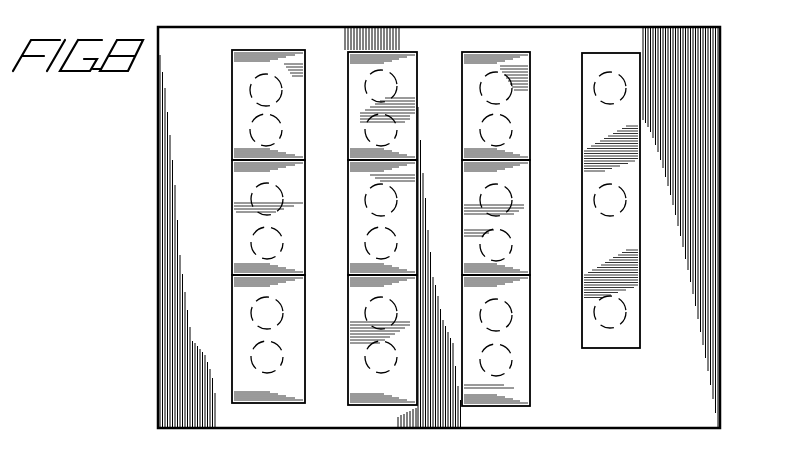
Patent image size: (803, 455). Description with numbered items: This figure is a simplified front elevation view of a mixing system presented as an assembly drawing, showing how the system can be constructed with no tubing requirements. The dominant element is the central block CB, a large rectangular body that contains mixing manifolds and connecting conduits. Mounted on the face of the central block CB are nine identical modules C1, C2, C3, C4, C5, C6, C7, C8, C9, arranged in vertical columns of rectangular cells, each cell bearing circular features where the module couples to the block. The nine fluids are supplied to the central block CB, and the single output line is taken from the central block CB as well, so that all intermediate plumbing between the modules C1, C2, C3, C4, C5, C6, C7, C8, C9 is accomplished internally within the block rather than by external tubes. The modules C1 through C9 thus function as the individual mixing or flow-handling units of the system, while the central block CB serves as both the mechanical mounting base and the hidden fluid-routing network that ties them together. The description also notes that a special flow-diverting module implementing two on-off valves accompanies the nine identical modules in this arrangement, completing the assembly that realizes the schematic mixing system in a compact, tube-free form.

The module C1 is at (268, 105).
The module C2 is at (382, 106).
The module C3 is at (496, 106).
The module C4 is at (268, 339).
The module C5 is at (382, 340).
The module C6 is at (496, 340).
The module C7 is at (268, 217).
The module C8 is at (382, 217).
The module C9 is at (496, 217).
The central block CB is at (721, 356).